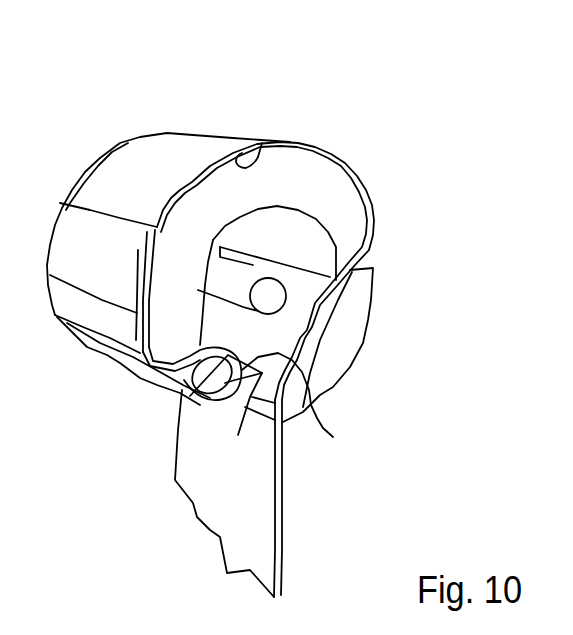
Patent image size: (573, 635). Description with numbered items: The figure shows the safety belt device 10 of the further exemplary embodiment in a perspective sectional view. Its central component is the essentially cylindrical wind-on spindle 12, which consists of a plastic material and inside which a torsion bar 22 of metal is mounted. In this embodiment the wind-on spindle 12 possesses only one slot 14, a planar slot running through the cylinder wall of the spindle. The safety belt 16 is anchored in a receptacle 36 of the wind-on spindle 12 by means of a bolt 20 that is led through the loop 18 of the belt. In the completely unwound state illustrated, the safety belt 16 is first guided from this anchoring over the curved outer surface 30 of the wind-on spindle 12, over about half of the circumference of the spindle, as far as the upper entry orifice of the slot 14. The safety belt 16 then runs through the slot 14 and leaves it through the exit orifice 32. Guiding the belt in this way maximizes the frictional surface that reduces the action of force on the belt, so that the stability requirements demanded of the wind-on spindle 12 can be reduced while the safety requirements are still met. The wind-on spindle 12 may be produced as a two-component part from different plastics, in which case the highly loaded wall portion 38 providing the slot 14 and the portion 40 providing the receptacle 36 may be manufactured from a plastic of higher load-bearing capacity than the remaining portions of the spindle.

The safety belt device 10 is at (85, 86).
The wind-on spindle 12 is at (210, 248).
The slot 14 is at (361, 316).
The safety belt 16 is at (305, 523).
The loop 18 is at (237, 398).
The bolt 20 is at (174, 399).
The torsion bar 22 is at (328, 282).
The curved outer surface 30 is at (264, 116).
The exit orifice 32 is at (224, 493).
The receptacle 36 is at (312, 405).
The wall portion 38 is at (371, 366).
The portion providing the receptacle 40 is at (129, 372).